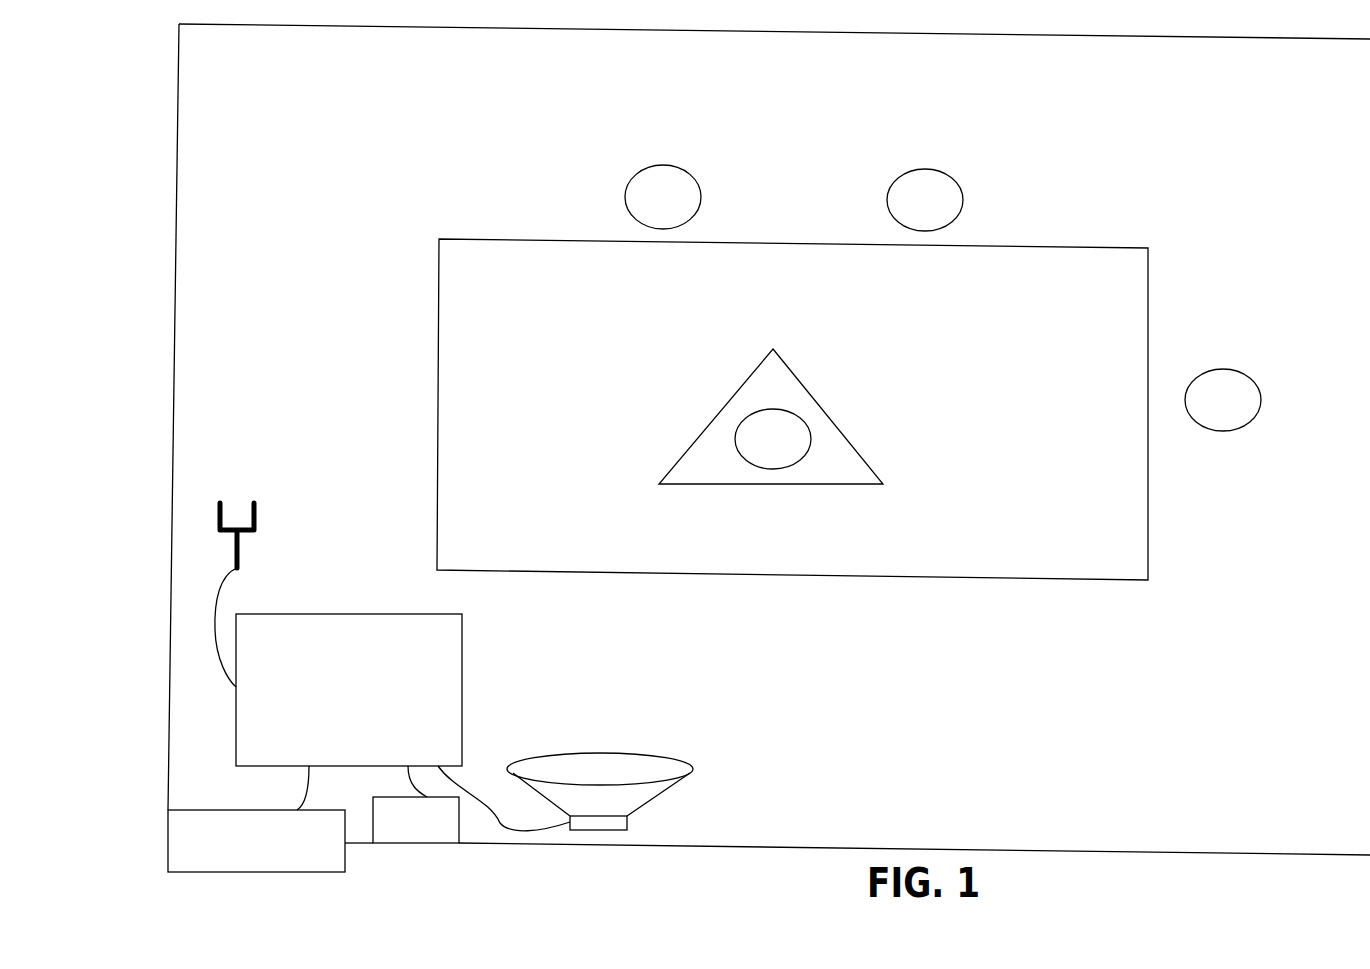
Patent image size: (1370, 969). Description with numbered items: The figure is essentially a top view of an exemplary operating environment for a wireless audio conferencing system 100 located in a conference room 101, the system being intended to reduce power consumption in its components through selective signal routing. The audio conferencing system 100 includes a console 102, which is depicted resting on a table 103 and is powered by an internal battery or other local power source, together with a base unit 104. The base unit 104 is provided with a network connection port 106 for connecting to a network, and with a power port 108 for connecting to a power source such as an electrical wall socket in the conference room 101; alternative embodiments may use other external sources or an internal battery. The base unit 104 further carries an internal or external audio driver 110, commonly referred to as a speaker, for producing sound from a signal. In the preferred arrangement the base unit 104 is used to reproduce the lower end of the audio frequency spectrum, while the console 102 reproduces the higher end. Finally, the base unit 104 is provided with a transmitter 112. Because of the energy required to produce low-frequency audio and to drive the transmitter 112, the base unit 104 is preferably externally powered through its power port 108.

The audio conferencing system 100 is at (513, 320).
The conference room 101 is at (253, 58).
The console 102 is at (827, 413).
The table 103 is at (504, 274).
The base unit 104 is at (462, 678).
The network connection port 106 is at (327, 872).
The power port 108 is at (460, 843).
The audio driver 110 is at (690, 770).
The transmitter 112 is at (240, 557).